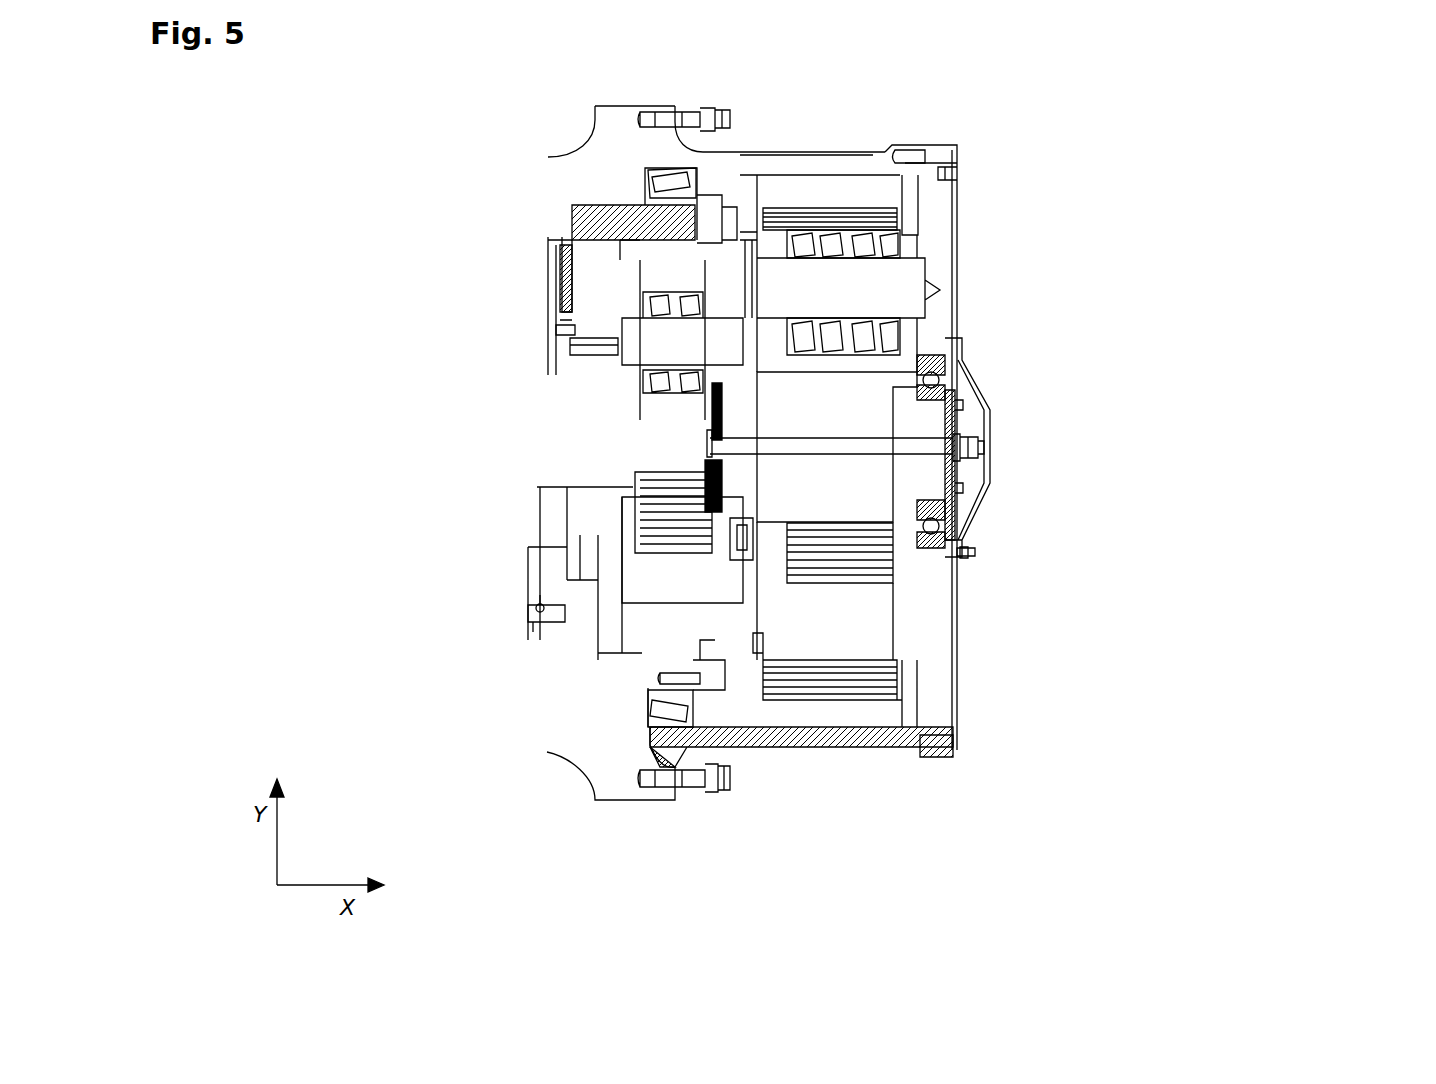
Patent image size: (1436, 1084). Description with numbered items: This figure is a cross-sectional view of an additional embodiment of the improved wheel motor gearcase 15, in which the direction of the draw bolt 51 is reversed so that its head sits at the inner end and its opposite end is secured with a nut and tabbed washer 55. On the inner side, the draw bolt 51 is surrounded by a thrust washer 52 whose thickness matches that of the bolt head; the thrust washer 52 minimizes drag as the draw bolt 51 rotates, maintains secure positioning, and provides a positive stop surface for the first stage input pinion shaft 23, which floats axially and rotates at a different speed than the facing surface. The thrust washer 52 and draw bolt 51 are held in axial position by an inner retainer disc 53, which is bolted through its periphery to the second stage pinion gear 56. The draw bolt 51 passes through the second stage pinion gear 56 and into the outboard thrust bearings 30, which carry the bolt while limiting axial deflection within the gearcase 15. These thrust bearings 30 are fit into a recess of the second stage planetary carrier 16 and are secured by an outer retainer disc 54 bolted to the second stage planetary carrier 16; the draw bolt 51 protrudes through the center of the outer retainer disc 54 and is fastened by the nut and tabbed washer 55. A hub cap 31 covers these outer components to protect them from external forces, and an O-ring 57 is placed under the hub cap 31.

The gearcase 15 is at (940, 230).
The second stage planetary carrier 16 is at (940, 268).
The outboard thrust bearings 30 is at (945, 360).
The hub cap 31 is at (975, 390).
The outer retainer disc 54 is at (958, 420).
The nut and tabbed washer 55 is at (975, 447).
The second stage pinion gear 56 is at (860, 482).
The O-ring 57 is at (972, 545).
The draw bolt 51 is at (712, 438).
The inner retainer disc 53 is at (712, 454).
The thrust washer 52 is at (712, 465).
The first stage input pinion shaft 23 is at (540, 476).